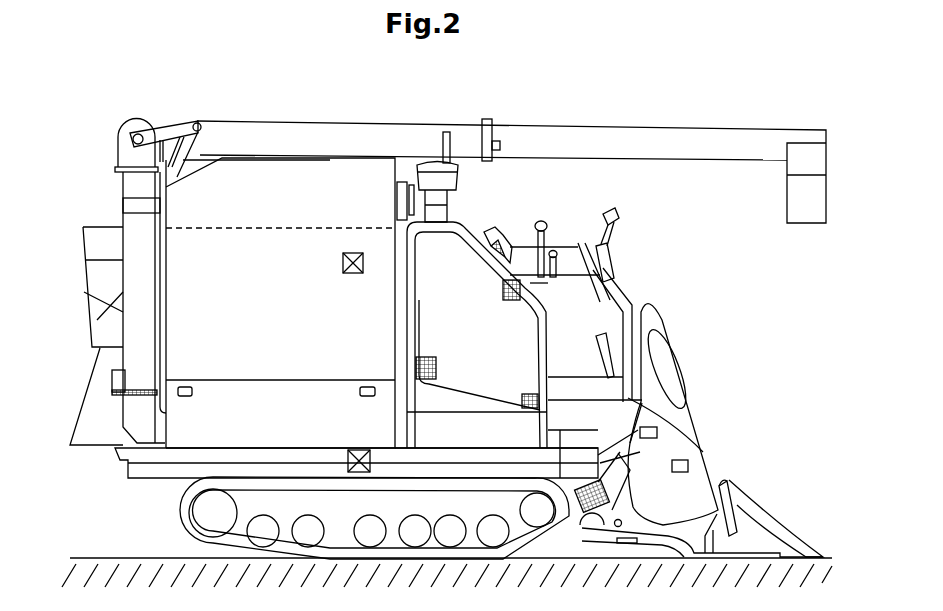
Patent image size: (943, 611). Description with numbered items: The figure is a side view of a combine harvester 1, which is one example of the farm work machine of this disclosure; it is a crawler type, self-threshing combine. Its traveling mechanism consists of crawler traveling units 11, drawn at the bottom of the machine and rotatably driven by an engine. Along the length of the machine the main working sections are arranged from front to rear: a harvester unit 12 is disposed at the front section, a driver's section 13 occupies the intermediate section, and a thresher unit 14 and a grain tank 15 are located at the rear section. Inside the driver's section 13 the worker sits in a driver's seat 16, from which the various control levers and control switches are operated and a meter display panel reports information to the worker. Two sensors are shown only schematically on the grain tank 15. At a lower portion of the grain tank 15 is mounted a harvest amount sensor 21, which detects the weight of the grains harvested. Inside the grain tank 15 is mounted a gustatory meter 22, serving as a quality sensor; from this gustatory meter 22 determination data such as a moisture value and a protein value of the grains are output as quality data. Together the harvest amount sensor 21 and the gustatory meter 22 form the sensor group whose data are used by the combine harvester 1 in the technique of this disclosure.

The combine harvester 1 is at (108, 118).
The crawler traveling unit 11 is at (180, 508).
The harvester unit 12 is at (690, 333).
The driver's section 13 is at (563, 217).
The thresher unit 14 is at (285, 228).
The grain tank 15 is at (187, 290).
The driver's seat 16 is at (496, 237).
The harvest amount sensor 21 is at (351, 450).
The gustatory meter 22 is at (352, 274).